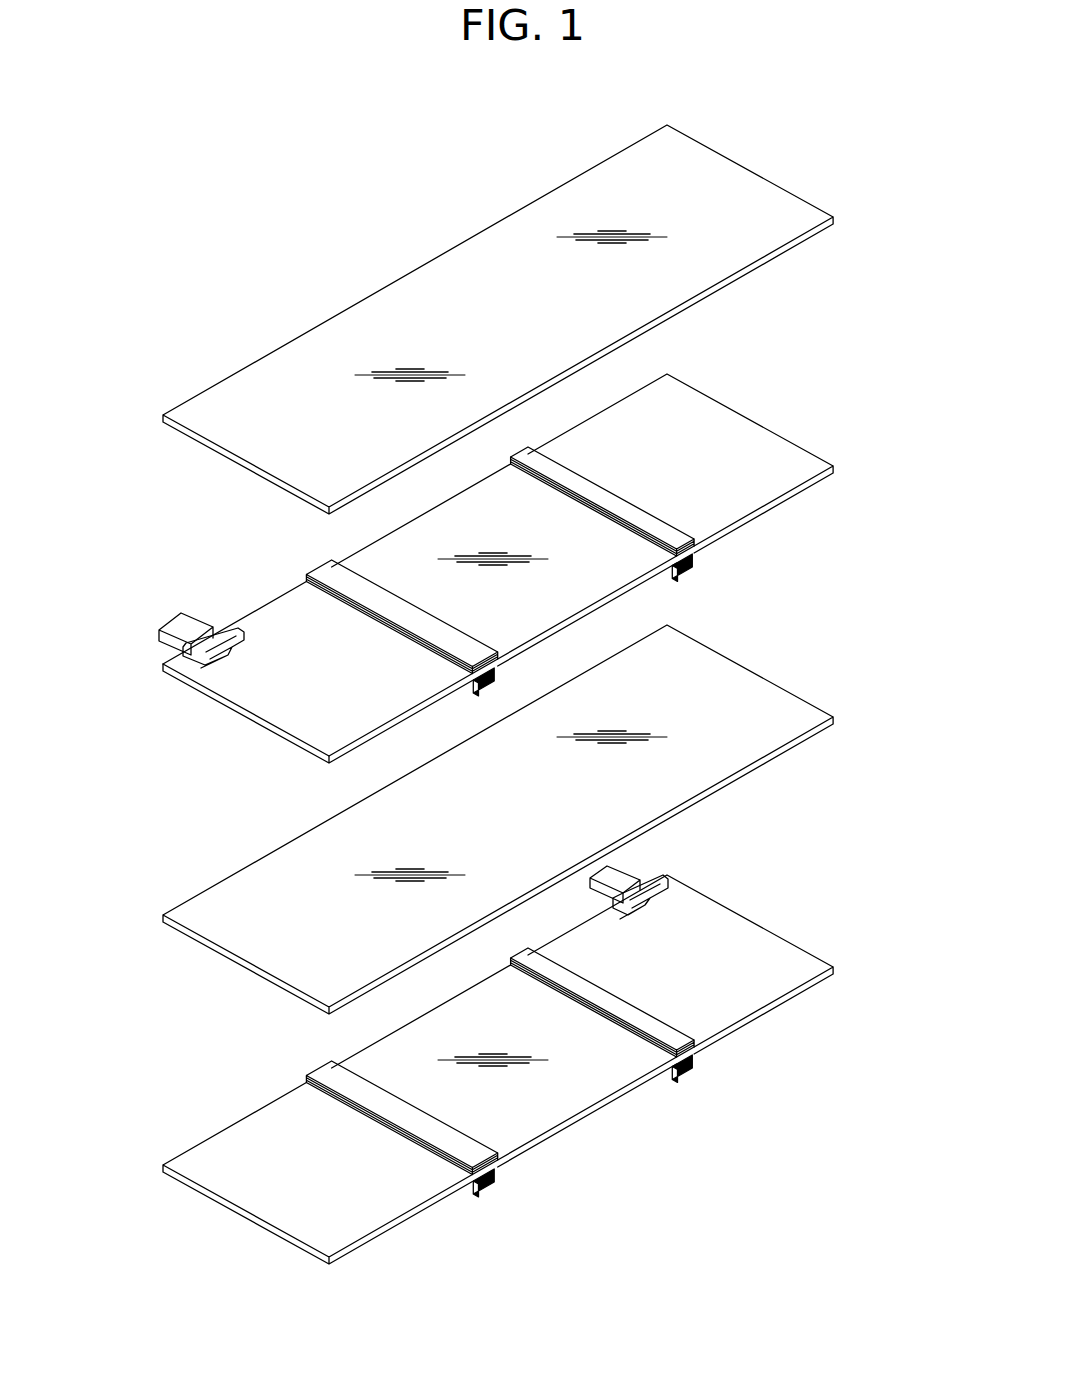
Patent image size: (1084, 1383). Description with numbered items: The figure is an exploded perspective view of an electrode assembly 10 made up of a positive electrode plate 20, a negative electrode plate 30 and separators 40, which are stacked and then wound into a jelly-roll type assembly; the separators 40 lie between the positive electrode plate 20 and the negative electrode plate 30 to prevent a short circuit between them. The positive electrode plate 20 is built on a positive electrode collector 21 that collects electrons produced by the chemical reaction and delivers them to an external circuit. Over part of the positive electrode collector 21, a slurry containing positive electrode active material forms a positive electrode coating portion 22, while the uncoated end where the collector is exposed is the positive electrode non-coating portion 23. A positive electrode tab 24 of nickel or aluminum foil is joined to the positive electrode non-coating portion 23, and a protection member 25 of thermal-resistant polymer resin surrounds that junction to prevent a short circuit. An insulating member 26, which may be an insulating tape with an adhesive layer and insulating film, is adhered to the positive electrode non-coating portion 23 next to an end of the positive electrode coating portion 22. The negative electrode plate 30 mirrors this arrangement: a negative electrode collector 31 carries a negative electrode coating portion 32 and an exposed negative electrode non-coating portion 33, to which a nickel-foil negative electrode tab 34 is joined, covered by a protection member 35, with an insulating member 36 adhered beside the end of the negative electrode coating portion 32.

The electrode assembly 10 is at (312, 228).
The separator 40 is at (748, 193).
The positive electrode plate 20 is at (800, 425).
The positive electrode collector 21 is at (285, 732).
The positive electrode coating portion 22 is at (504, 565).
The positive electrode non-coating portion 23 is at (257, 705).
The positive electrode tab 24 is at (177, 623).
The protection member 25 is at (180, 652).
The insulating member 26 is at (500, 560).
The negative electrode plate 30 is at (210, 1220).
The negative electrode collector 31 is at (800, 947).
The negative electrode coating portion 32 is at (504, 1066).
The negative electrode non-coating portion 33 is at (680, 964).
The negative electrode tab 34 is at (613, 880).
The protection member 35 is at (680, 882).
The insulating member 36 is at (582, 1126).